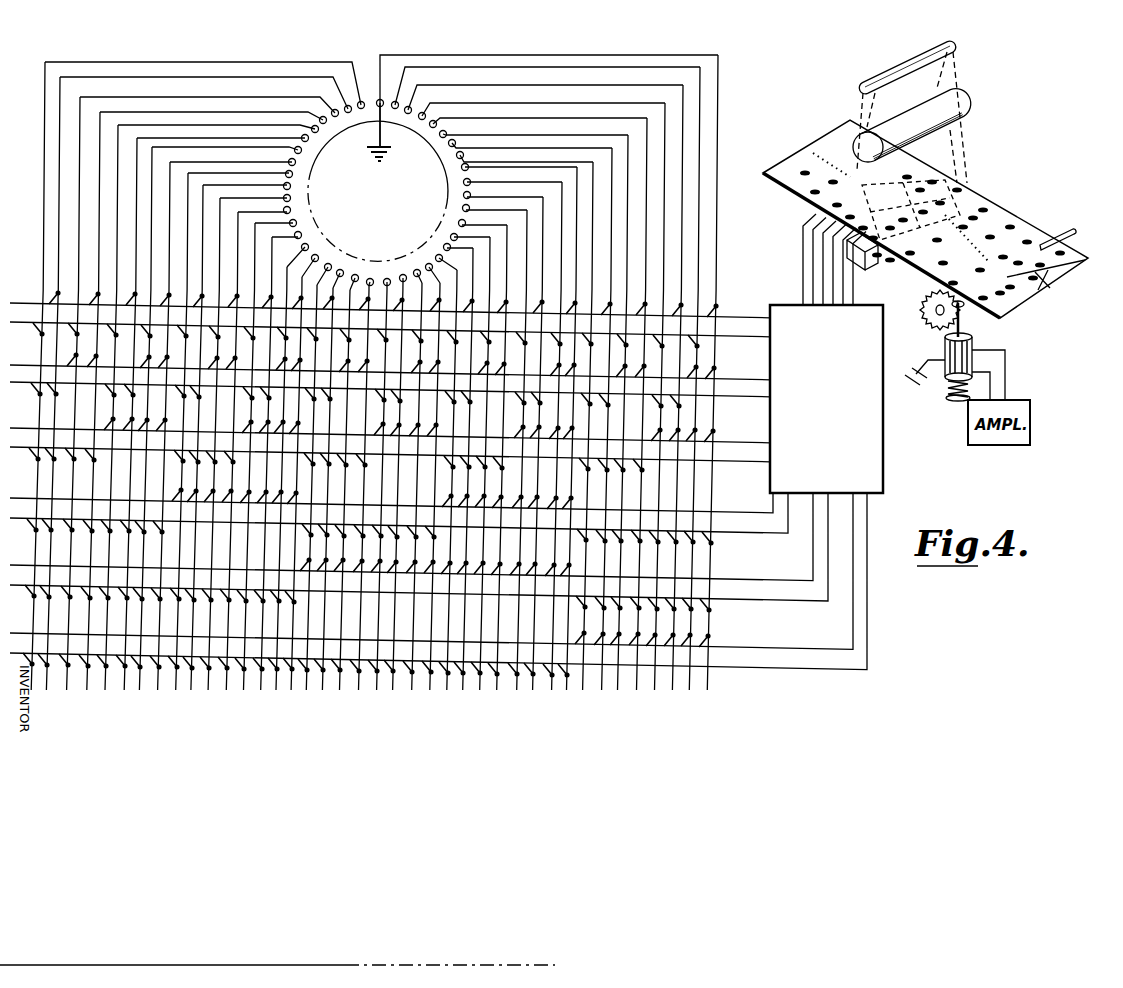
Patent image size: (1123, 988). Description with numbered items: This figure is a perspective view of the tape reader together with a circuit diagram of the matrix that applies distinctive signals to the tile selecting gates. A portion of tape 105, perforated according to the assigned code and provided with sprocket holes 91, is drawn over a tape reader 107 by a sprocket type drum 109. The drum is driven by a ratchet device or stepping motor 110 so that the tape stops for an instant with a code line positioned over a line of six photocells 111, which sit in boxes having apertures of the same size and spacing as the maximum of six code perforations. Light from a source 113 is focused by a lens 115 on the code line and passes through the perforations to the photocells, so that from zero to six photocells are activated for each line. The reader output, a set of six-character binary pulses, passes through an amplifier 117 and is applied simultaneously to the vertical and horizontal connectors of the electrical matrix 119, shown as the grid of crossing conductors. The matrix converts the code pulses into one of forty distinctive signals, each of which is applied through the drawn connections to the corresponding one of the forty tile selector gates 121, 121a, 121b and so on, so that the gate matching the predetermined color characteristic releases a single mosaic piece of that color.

The sprocket holes 91 is at (1046, 270).
The tape 105 is at (793, 128).
The tape reader 107 is at (1035, 169).
The sprocket type drum 109 is at (967, 316).
The stepping motor 110 is at (976, 350).
The photocells 111 is at (880, 270).
The light source 113 is at (884, 74).
The lens 115 is at (950, 110).
The amplifier 117 is at (826, 399).
The electrical matrix 119 is at (753, 430).
The tile selector gate 121 is at (361, 100).
The tile selector gate 121a is at (383, 69).
The tile selector gate 121b is at (395, 100).